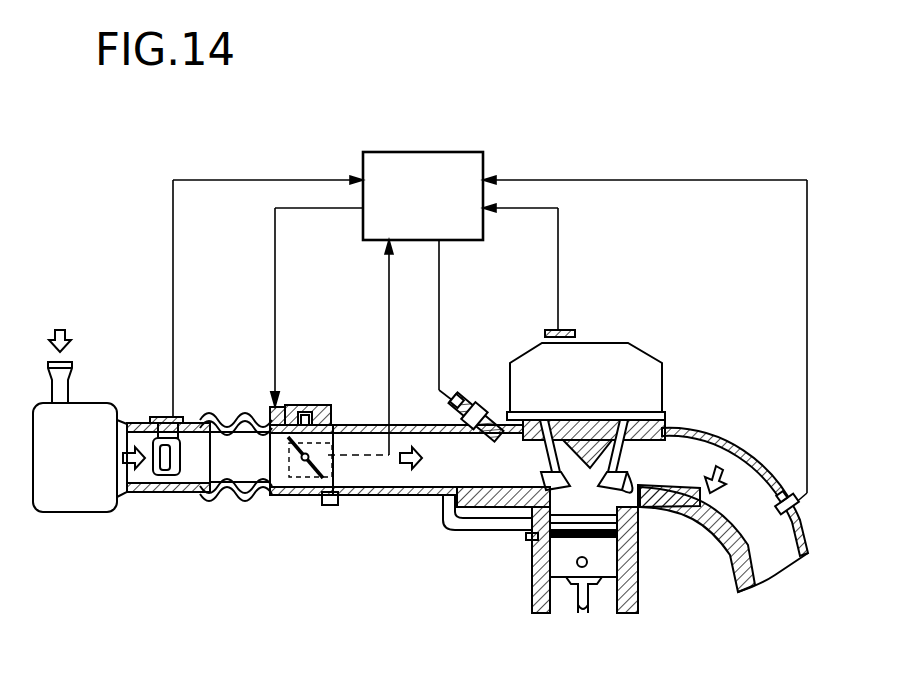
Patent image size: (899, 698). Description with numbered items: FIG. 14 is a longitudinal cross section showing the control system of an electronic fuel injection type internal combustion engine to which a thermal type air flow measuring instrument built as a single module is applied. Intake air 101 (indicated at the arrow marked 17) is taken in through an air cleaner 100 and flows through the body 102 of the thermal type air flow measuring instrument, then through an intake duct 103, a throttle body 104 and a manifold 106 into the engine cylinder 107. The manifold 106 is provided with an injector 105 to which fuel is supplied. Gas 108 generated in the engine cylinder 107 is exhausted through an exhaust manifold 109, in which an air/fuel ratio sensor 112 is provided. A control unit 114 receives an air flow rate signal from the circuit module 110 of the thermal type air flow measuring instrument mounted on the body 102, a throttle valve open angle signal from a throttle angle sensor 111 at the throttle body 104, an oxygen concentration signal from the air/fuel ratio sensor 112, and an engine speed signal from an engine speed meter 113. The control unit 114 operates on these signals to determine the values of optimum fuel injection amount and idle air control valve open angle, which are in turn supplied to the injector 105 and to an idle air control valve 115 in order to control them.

The intake air 17 is at (58, 331).
The intake air 101 is at (63, 331).
The air cleaner 100 is at (88, 405).
The circuit module 110 is at (163, 418).
The body 102 is at (162, 492).
The intake duct 103 is at (213, 412).
The idle air control valve 115 is at (268, 412).
The throttle body 104 is at (313, 497).
The throttle angle sensor 111 is at (290, 495).
The manifold 106 is at (362, 425).
The injector 105 is at (455, 395).
The engine speed meter 113 is at (578, 334).
The control unit 114 is at (484, 158).
The engine cylinder 107 is at (597, 503).
The gas 108 is at (714, 466).
The exhaust manifold 109 is at (735, 448).
The air/fuel ratio sensor 112 is at (781, 499).